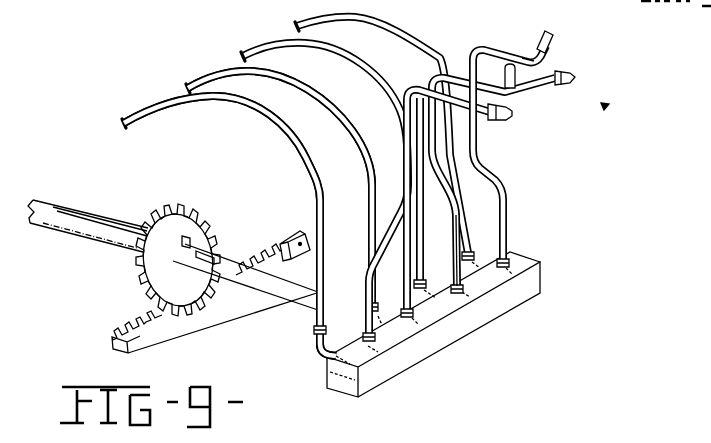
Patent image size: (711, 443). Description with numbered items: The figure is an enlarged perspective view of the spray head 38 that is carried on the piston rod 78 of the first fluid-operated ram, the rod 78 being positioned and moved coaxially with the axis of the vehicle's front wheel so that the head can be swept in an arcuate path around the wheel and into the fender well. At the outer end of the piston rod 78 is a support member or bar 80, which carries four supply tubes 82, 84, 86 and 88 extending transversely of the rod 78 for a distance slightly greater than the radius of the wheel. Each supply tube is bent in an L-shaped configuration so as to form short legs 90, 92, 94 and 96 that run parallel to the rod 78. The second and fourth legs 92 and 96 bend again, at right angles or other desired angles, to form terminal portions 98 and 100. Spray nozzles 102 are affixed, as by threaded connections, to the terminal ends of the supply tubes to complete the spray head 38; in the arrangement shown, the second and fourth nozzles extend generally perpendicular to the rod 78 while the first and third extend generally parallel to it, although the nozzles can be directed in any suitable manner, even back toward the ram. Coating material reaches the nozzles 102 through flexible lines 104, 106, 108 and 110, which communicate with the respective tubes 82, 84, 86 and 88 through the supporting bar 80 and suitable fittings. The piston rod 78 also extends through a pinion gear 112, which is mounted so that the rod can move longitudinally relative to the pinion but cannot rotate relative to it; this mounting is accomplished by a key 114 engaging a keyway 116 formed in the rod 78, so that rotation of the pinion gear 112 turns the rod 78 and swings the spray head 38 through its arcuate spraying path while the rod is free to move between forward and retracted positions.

The spray head 38 is at (603, 104).
The piston rod 78 is at (255, 292).
The support member or bar 80 is at (442, 348).
The supply tube 82 is at (316, 307).
The supply tube 84 is at (382, 251).
The supply tube 86 is at (455, 248).
The supply tube 88 is at (510, 207).
The short leg 90 is at (390, 80).
The short leg 92 is at (427, 46).
The short leg 94 is at (493, 46).
The short leg 96 is at (527, 53).
The terminal portion 98 is at (520, 99).
The terminal portion 100 is at (577, 68).
The spray nozzle 102 is at (557, 39).
The flexible line 104 is at (280, 133).
The flexible line 106 is at (310, 88).
The flexible line 108 is at (337, 55).
The flexible line 110 is at (380, 28).
The pinion gear 112 is at (136, 282).
The key 114 is at (208, 232).
The keyway 116 is at (225, 248).